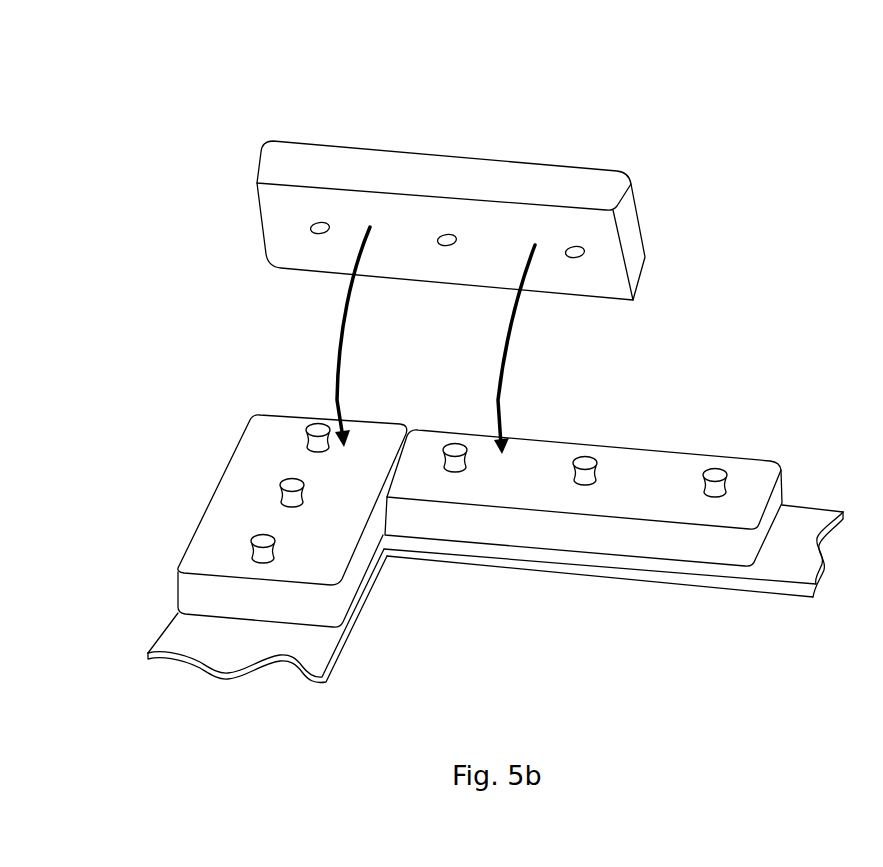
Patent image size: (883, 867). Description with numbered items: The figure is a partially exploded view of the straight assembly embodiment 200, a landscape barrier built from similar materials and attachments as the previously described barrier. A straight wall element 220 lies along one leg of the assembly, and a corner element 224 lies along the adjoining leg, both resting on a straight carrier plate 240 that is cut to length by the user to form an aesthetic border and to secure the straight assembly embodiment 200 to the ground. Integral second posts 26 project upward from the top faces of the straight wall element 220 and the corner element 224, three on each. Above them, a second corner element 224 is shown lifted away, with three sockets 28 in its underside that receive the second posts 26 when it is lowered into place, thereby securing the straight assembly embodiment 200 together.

The straight assembly embodiment 200 is at (125, 156).
The corner element 224 is at (597, 191).
The sockets 28 is at (571, 248).
The straight wall element 220 is at (648, 465).
The second posts 26 is at (311, 432).
The straight carrier plate 240 is at (792, 528).